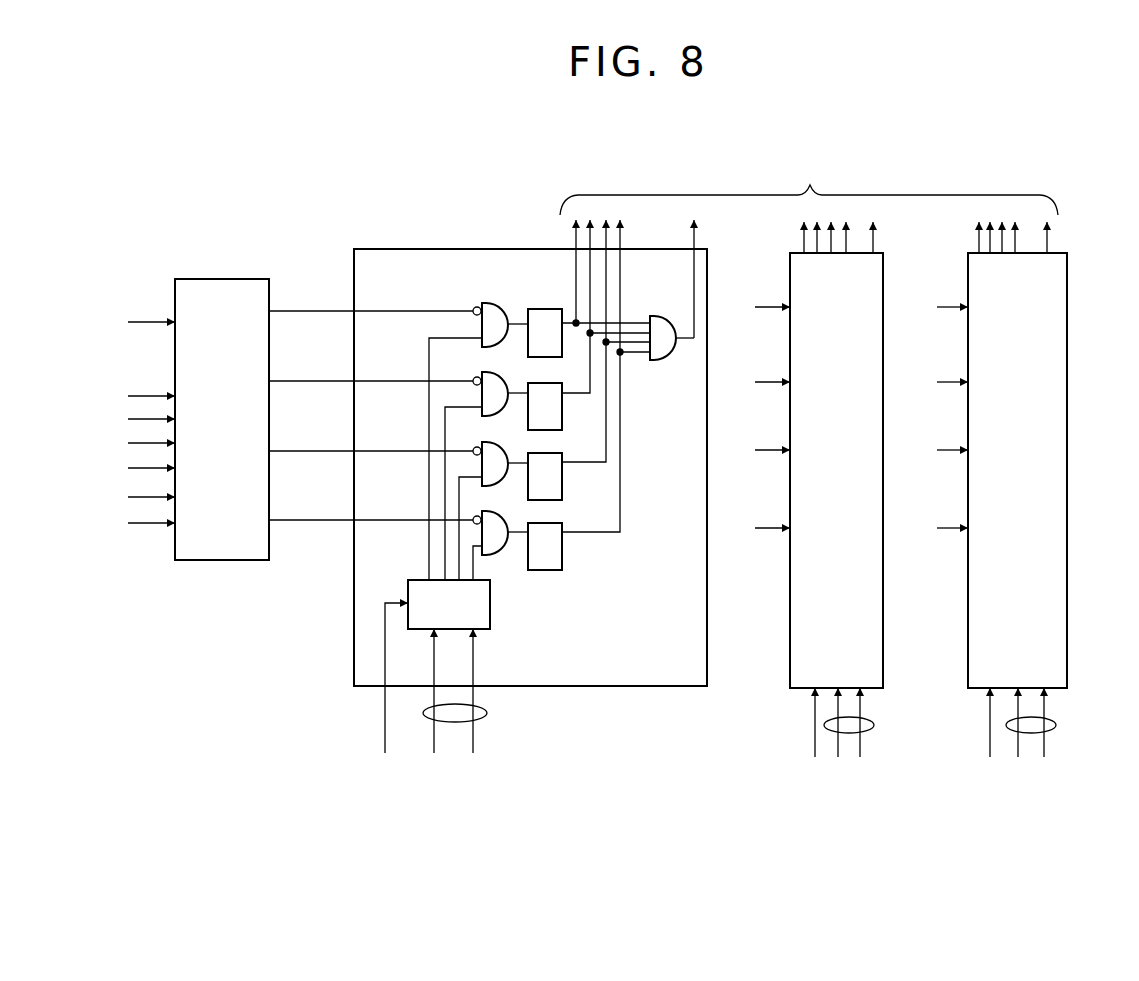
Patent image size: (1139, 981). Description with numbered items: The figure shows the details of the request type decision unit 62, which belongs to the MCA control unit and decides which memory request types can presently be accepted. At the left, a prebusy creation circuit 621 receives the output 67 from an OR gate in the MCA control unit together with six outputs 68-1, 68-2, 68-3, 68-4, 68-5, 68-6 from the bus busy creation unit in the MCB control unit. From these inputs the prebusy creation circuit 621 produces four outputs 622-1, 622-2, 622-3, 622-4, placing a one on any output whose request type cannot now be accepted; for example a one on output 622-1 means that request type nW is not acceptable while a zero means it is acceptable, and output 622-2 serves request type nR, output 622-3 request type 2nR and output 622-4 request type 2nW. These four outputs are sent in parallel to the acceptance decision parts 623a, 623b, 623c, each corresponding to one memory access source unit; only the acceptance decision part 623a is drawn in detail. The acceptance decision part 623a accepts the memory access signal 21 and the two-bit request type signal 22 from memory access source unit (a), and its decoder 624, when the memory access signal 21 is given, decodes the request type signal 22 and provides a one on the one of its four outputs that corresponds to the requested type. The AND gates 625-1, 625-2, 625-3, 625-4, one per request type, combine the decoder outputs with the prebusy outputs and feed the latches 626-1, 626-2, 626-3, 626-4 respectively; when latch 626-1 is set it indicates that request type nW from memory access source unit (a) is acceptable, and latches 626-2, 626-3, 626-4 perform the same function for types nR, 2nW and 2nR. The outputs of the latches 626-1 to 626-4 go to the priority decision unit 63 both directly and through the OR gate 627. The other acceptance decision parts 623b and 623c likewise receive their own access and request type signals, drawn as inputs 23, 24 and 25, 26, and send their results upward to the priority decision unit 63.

The request type decision unit 62 is at (315, 117).
The priority decision unit 63 is at (809, 186).
The prebusy creation circuit 621 is at (213, 278).
The output from OR gate 67 is at (138, 320).
The output from bus busy creation unit 68-1 is at (140, 394).
The output from bus busy creation unit 68-2 is at (130, 418).
The output from bus busy creation unit 68-3 is at (130, 443).
The output from bus busy creation unit 68-4 is at (130, 468).
The output from bus busy creation unit 68-5 is at (130, 497).
The output from bus busy creation unit 68-6 is at (130, 523).
The output for request type nW 622-1 is at (279, 313).
The output for request type nR 622-2 is at (279, 383).
The output for request type 2nR 622-3 is at (279, 453).
The output for request type 2nW 622-4 is at (279, 522).
The acceptance decision part 623a is at (422, 249).
The acceptance decision part 623b is at (883, 655).
The acceptance decision part 623c is at (1067, 655).
The decoder 624 is at (492, 608).
The AND gate 625-1 is at (486, 302).
The AND gate 625-2 is at (482, 373).
The AND gate 625-3 is at (482, 444).
The AND gate 625-4 is at (482, 512).
The latch 626-1 is at (528, 318).
The latch 626-2 is at (562, 408).
The latch 626-3 is at (562, 482).
The latch 626-4 is at (562, 522).
The OR gate 627 is at (633, 356).
The memory access signal 21 is at (385, 741).
The request type signal 22 is at (482, 717).
The control signal line 23 is at (812, 726).
The signal lines 24 is at (874, 722).
The control signal line 25 is at (988, 726).
The signal lines 26 is at (1056, 722).